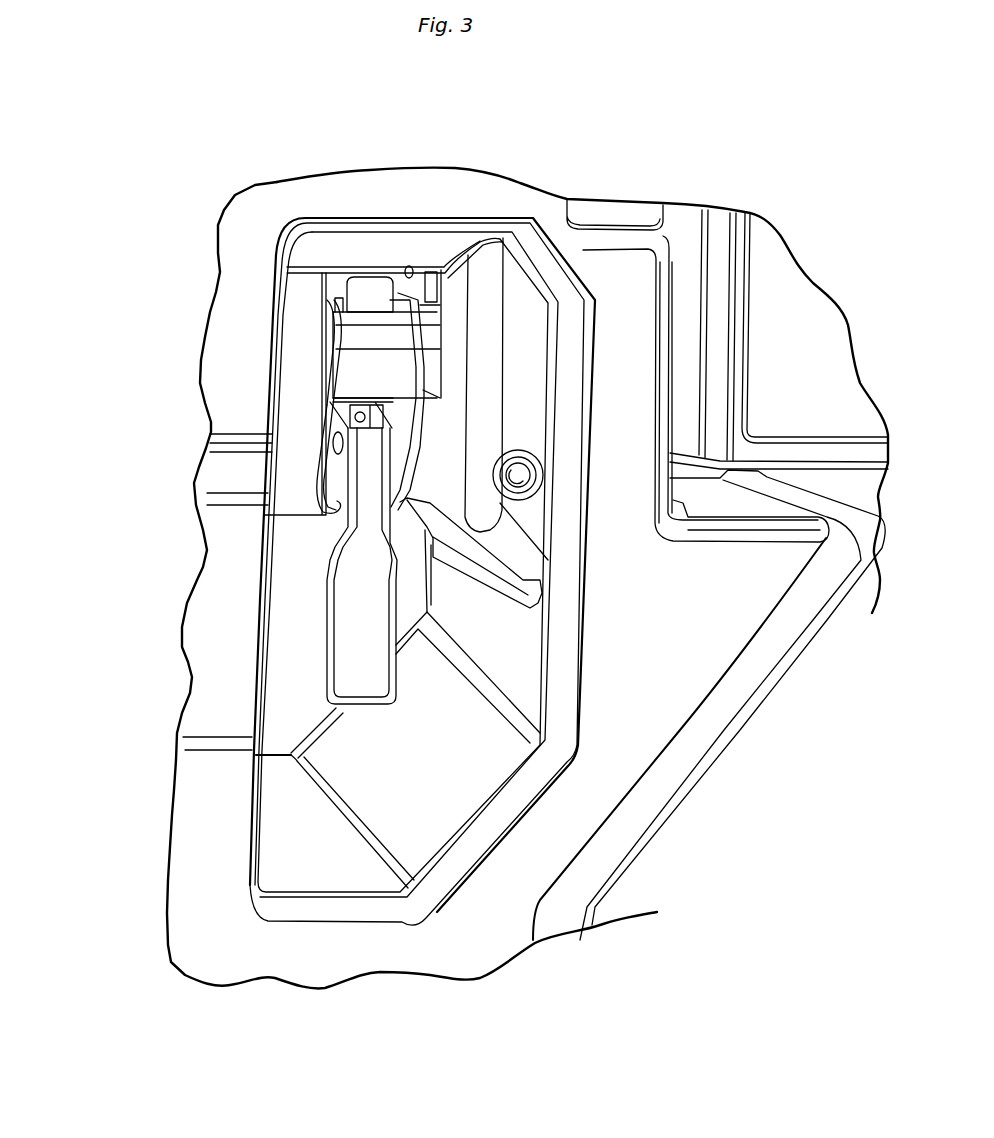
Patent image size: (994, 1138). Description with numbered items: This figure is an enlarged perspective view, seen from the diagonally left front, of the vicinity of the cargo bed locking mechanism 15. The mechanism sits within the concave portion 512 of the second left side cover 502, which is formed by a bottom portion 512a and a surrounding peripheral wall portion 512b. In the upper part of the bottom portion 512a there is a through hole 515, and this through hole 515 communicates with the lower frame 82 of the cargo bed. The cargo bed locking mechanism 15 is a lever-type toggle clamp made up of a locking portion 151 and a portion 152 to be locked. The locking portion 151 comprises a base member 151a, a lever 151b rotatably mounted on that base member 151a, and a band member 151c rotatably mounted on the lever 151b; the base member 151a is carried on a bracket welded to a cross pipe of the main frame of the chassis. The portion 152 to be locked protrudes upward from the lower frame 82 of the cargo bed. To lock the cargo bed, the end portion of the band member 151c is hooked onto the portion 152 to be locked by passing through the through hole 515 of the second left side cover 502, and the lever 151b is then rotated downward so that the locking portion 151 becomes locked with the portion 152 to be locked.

The cargo bed locking mechanism 15 is at (327, 207).
The portion to be locked 152 is at (368, 283).
The through hole 515 is at (423, 272).
The lower frame 82 is at (380, 370).
The locking portion 151 is at (231, 498).
The base member 151a is at (333, 460).
The lever 151b is at (347, 605).
The band member 151c is at (327, 370).
The second left side cover 502 is at (241, 947).
The concave portion 512 is at (422, 668).
The bottom portion 512a is at (270, 727).
The peripheral wall portion 512b is at (417, 787).